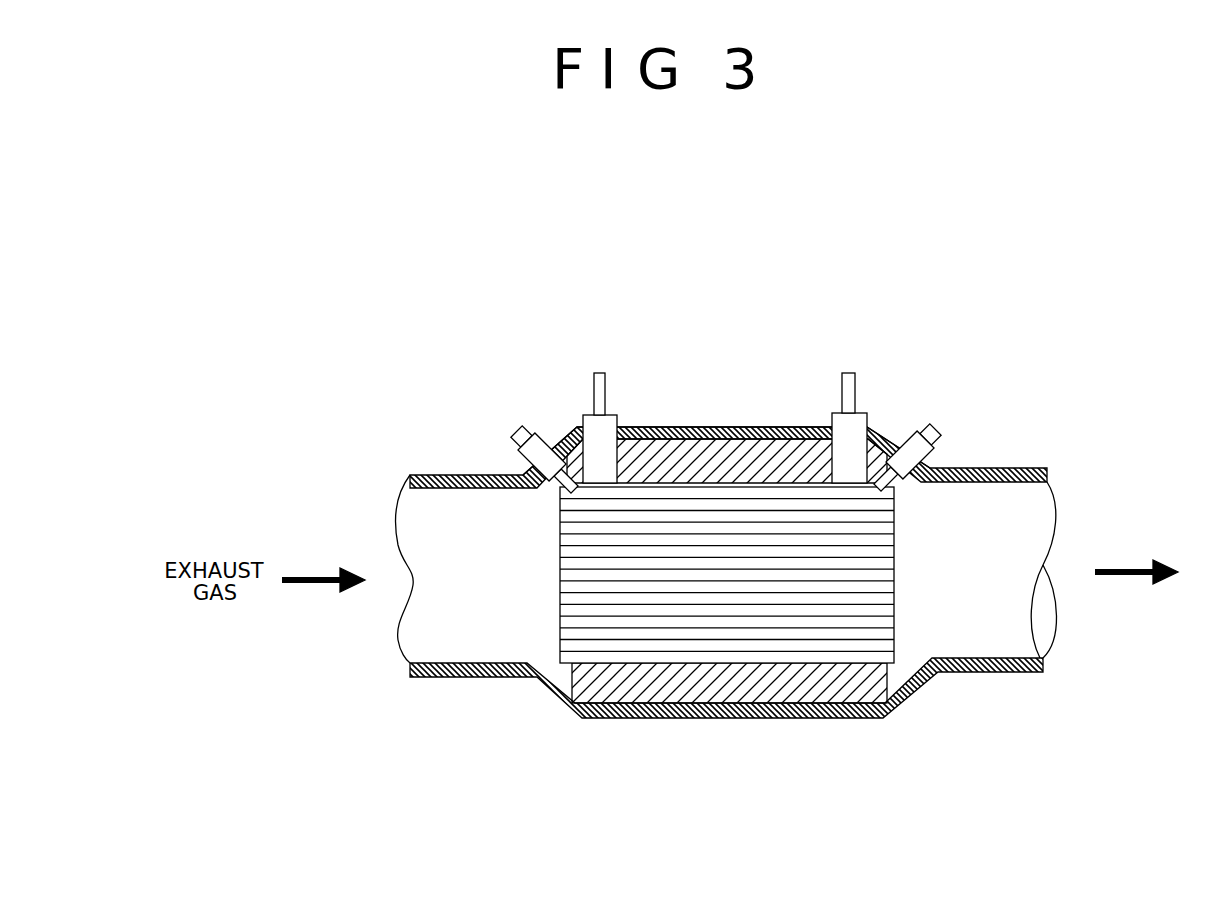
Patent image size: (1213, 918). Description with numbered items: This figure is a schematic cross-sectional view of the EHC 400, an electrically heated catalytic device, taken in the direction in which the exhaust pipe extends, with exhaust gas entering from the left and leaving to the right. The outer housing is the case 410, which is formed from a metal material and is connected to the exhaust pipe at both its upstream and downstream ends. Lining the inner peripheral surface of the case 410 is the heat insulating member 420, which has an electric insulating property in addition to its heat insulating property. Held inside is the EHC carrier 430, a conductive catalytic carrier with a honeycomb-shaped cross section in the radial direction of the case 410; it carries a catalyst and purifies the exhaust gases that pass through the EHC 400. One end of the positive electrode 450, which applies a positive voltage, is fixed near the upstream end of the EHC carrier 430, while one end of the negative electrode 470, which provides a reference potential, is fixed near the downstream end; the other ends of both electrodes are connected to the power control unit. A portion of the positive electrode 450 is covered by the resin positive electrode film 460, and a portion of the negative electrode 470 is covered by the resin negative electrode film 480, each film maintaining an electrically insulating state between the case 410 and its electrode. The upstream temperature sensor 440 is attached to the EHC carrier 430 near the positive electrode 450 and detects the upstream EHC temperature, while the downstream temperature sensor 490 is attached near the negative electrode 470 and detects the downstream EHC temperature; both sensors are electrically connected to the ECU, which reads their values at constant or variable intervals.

The EHC 400 is at (1017, 268).
The case 410 is at (448, 678).
The heat insulating member 420 is at (810, 682).
The EHC carrier 430 is at (694, 630).
The upstream temperature sensor 440 is at (517, 430).
The positive electrode 450 is at (598, 373).
The positive electrode film 460 is at (587, 418).
The negative electrode 470 is at (850, 373).
The negative electrode film 480 is at (858, 422).
The downstream temperature sensor 490 is at (927, 430).